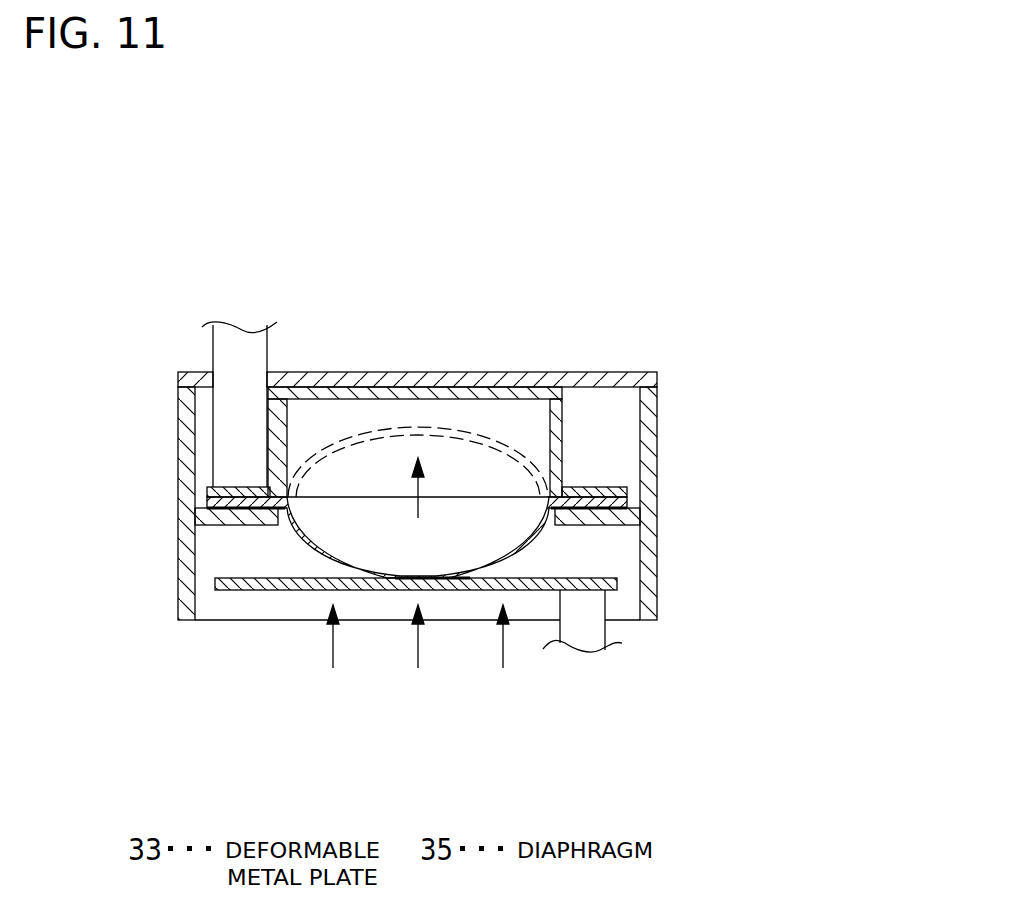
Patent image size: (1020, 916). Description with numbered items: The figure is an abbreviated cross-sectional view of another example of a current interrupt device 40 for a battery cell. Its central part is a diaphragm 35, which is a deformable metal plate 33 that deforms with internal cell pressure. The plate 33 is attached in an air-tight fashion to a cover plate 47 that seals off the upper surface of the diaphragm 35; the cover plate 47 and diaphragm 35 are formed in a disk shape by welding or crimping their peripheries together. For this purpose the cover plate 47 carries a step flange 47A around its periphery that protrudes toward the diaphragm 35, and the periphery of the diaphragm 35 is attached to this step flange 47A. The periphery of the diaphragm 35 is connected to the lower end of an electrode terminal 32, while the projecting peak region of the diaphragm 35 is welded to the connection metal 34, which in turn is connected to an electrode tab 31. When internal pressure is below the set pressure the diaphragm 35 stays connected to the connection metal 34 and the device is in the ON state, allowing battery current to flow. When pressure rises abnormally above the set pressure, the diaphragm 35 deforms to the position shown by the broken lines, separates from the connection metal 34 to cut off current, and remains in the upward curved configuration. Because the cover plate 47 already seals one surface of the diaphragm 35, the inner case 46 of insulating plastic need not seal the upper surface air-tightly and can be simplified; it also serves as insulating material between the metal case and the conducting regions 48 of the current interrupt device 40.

The current interrupt device 40 is at (537, 322).
The inner case 46 is at (655, 450).
The electrode terminal 32 is at (250, 355).
The step flange 47A is at (243, 488).
The cover plate 47 is at (353, 393).
The conducting regions 48 is at (454, 606).
The deformable metal plate 33 is at (417, 583).
The diaphragm 35 is at (368, 572).
The connection metal 34 is at (518, 583).
The electrode tab 31 is at (595, 634).